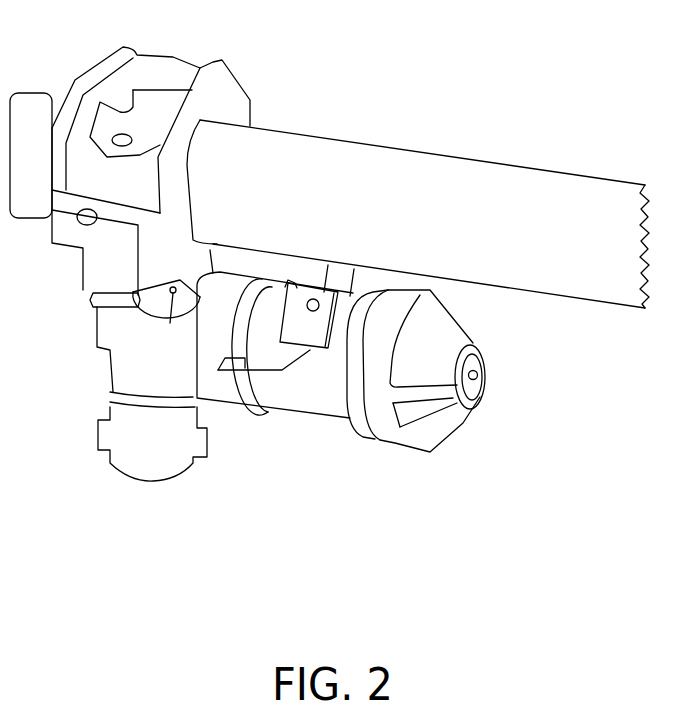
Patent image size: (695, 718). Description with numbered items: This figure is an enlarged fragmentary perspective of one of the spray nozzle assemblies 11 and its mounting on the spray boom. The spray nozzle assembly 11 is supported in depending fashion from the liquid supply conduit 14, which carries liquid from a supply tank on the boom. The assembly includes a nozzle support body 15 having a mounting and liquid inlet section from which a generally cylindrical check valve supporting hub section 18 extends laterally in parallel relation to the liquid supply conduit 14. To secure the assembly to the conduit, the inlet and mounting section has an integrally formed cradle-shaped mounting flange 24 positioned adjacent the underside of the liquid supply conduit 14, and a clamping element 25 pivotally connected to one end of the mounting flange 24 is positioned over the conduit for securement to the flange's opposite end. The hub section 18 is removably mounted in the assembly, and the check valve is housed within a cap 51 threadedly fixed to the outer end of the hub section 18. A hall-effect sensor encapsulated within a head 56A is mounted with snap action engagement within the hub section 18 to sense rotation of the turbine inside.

The spray nozzle assembly 11 is at (363, 447).
The liquid supply conduit 14 is at (548, 182).
The nozzle support body 15 is at (103, 350).
The check valve supporting hub section 18 is at (313, 410).
The cradle-shaped mounting flange 24 is at (63, 250).
The clamping element 25 is at (173, 57).
The cap 51 is at (460, 315).
The head 56A is at (299, 316).